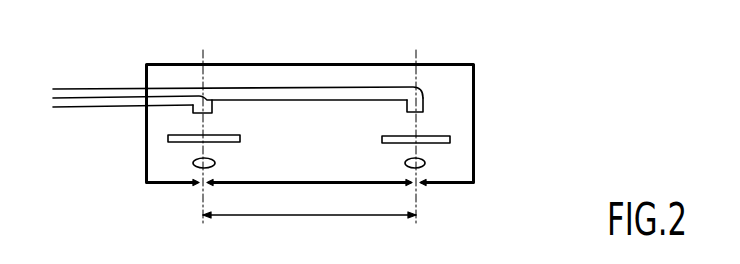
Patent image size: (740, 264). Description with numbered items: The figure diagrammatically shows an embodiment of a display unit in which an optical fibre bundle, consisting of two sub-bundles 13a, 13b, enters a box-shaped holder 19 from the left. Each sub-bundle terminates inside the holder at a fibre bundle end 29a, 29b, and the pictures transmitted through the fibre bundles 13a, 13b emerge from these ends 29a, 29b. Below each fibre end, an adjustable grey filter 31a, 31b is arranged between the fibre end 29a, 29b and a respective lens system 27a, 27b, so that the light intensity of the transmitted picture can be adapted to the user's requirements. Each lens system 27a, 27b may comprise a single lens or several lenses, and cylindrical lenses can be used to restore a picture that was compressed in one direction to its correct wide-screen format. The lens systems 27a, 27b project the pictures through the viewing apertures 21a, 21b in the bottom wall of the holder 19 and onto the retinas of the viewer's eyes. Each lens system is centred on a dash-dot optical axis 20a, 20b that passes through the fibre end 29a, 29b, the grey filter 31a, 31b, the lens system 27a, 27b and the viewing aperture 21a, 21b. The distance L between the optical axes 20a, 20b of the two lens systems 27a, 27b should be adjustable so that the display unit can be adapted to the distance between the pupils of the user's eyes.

The box-shaped holder 19 is at (462, 86).
The optical axis 20a is at (205, 53).
The optical axis 20b is at (414, 53).
The fibre sub-bundle 13a is at (73, 102).
The fibre sub-bundle 13b is at (112, 92).
The fibre bundle end 29a is at (212, 108).
The fibre bundle end 29b is at (424, 106).
The adjustable grey filter 31a is at (230, 135).
The adjustable grey filter 31b is at (393, 136).
The lens system 27a is at (215, 163).
The lens system 27b is at (405, 162).
The viewing aperture 21a is at (202, 188).
The viewing aperture 21b is at (418, 188).
The distance between optical axes L is at (313, 217).